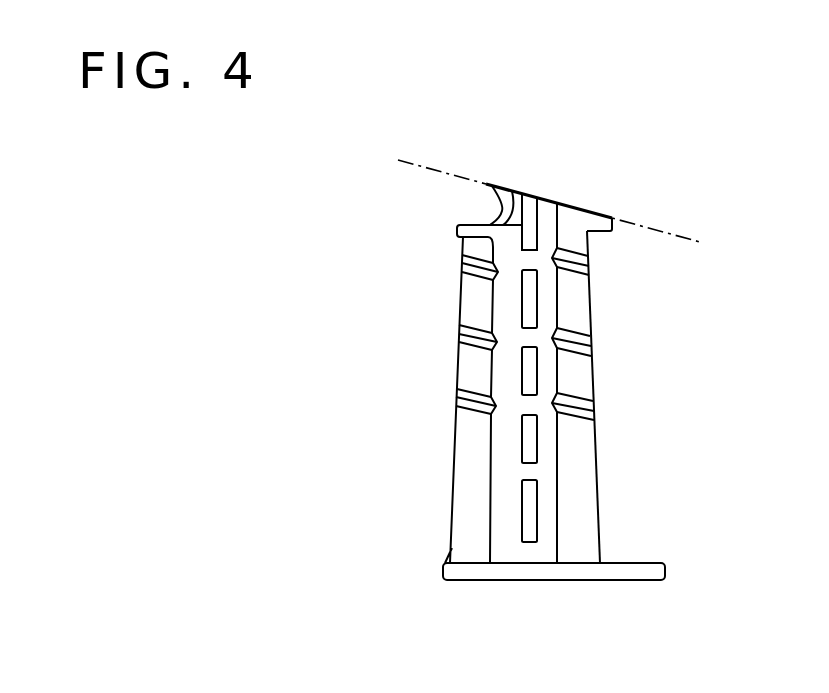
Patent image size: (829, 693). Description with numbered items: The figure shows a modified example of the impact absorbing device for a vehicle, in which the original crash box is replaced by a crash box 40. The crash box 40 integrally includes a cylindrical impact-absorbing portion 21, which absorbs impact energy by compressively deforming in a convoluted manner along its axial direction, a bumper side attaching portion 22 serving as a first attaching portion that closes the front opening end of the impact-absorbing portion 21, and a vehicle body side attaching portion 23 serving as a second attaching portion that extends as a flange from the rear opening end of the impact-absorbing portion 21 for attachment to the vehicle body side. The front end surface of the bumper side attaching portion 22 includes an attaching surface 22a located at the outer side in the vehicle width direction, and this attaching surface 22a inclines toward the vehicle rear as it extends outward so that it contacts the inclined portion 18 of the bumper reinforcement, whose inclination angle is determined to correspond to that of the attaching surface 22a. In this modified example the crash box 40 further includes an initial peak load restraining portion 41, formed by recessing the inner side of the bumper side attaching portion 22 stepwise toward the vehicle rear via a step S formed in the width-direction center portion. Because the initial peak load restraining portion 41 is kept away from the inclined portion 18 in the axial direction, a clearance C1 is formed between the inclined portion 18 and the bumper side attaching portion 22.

The inclined portion 18 is at (657, 230).
The impact-absorbing portion 21 is at (583, 378).
The bumper side attaching portion 22 is at (547, 200).
The attaching surface 22a is at (574, 200).
The vehicle body side attaching portion 23 is at (637, 564).
The crash box 40 is at (618, 320).
The initial peak load restraining portion 41 is at (487, 184).
The step S is at (510, 192).
The clearance C1 is at (467, 213).